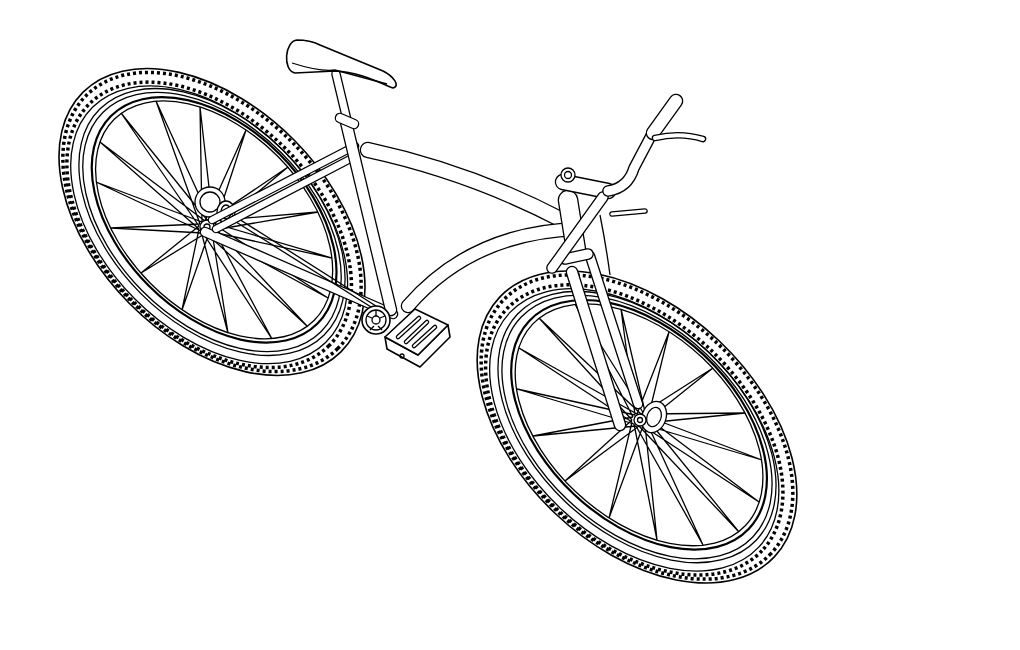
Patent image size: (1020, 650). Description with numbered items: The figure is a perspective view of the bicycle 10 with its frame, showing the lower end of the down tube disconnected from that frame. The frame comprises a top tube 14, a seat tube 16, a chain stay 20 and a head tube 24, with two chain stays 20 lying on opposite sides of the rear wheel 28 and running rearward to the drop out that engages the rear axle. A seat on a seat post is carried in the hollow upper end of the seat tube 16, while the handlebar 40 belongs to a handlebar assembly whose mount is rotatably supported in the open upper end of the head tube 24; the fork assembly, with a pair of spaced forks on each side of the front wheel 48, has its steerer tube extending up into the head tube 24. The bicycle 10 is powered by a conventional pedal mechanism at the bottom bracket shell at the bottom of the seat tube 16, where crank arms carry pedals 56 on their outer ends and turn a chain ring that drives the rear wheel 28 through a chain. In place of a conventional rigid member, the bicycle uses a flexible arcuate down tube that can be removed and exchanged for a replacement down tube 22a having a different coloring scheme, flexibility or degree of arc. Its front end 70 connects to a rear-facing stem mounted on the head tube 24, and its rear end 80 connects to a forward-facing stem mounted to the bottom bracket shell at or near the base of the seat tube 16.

The bicycle 10 is at (147, 440).
The top tube 14 is at (447, 163).
The seat tube 16 is at (347, 140).
The chain stay 20 is at (325, 285).
The replacement down tube 22a is at (480, 235).
The head tube 24 is at (560, 217).
The rear wheel 28 is at (123, 302).
The handlebar 40 is at (603, 340).
The front wheel 48 is at (760, 387).
The pedal 56 is at (421, 362).
The front end of down tube 70 is at (553, 243).
The rear end of down tube 80 is at (412, 305).